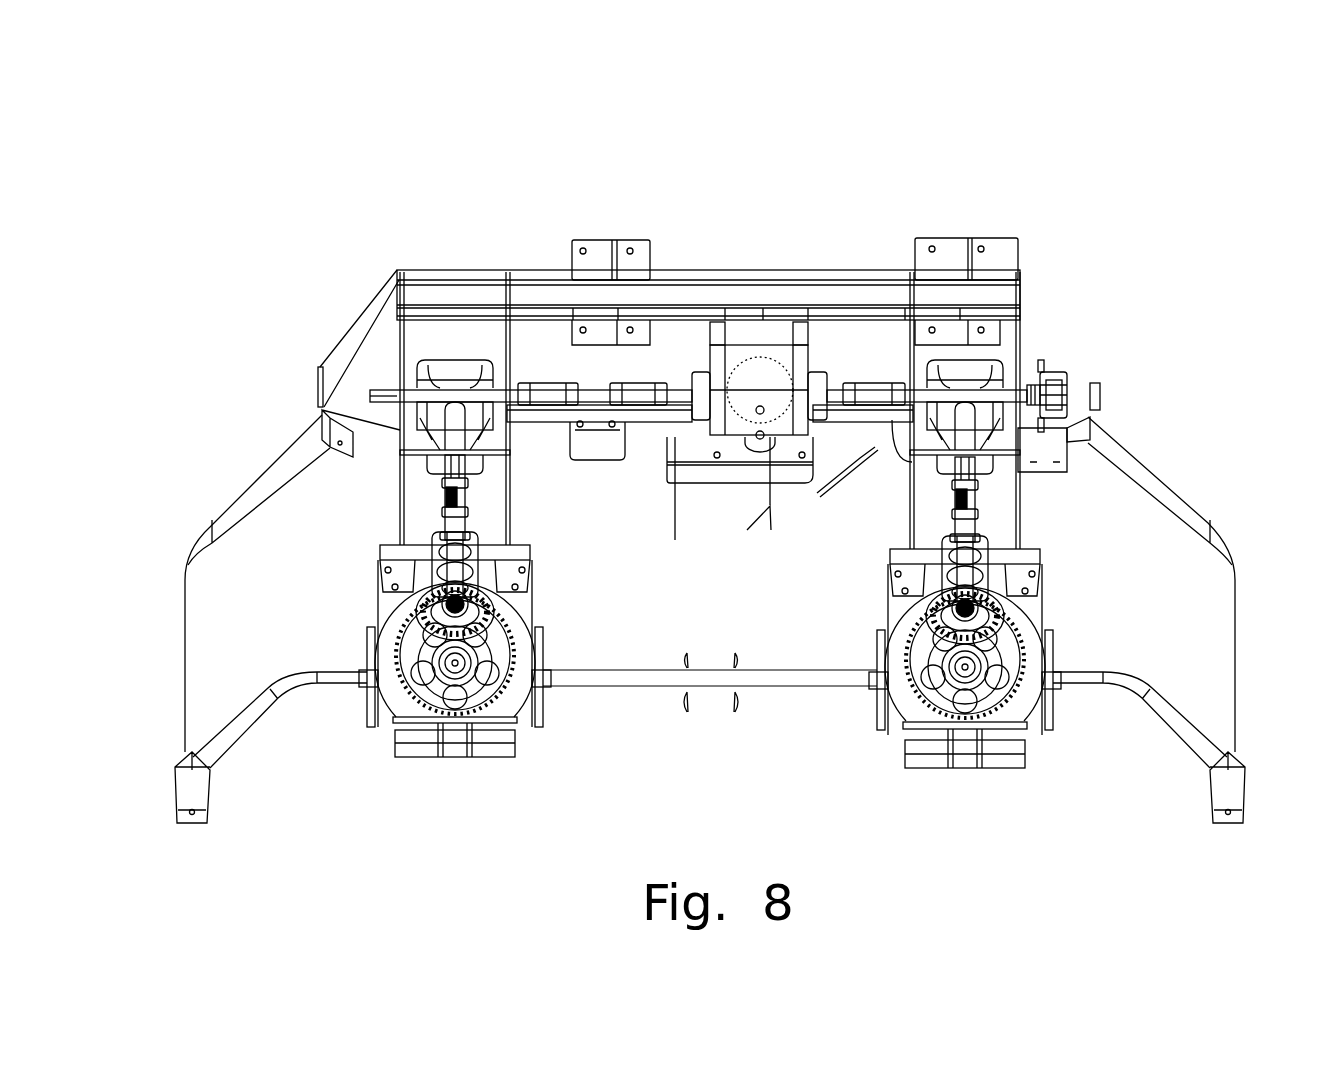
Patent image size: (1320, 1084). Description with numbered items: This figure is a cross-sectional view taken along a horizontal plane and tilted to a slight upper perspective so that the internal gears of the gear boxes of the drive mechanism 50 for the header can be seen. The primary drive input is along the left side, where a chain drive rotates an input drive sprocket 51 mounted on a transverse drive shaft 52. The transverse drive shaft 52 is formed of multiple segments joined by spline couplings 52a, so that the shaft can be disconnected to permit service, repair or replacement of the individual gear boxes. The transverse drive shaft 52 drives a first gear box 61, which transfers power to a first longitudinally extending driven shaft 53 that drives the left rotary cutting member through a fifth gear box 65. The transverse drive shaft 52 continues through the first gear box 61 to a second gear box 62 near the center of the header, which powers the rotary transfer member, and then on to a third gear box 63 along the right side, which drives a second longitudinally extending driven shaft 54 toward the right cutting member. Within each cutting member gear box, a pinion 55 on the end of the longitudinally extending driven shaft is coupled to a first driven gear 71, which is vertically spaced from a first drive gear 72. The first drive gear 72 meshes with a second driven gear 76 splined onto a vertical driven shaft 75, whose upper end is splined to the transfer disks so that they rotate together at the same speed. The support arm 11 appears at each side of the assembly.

The drive mechanism 50 is at (710, 436).
The support arm 11 is at (268, 700).
The input drive sprocket 51 is at (1042, 378).
The transverse drive shaft 52 is at (677, 400).
The spline couplings 52a is at (553, 385).
The first longitudinally extending driven shaft 53 is at (966, 490).
The second longitudinally extending driven shaft 54 is at (457, 473).
The pinion 55 is at (445, 565).
The first gear box 61 is at (980, 367).
The second gear box 62 is at (763, 353).
The third gear box 63 is at (435, 370).
The fifth gear box 65 is at (1092, 540).
The first driven gear 71 is at (495, 612).
The first drive gear 72 is at (433, 612).
The vertical driven shaft 75 is at (440, 665).
The second driven gear 76 is at (510, 676).